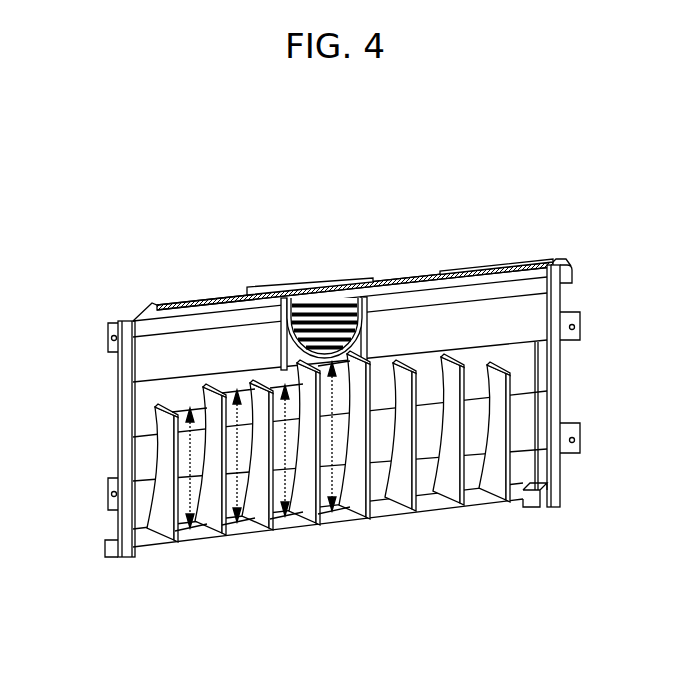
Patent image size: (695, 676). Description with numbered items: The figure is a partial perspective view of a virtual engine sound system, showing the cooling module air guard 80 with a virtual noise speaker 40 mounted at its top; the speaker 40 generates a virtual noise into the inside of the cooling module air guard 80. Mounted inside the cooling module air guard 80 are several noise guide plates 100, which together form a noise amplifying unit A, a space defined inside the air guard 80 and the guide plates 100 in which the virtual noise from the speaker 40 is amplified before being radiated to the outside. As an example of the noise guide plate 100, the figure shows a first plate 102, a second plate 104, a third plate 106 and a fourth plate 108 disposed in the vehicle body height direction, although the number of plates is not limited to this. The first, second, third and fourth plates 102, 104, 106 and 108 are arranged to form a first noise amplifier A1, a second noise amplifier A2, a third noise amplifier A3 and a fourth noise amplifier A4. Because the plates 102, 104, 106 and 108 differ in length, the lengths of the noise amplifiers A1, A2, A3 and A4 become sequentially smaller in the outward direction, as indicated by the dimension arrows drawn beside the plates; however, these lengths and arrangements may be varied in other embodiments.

The noise guide plate 100 is at (358, 540).
The first plate 102 is at (330, 529).
The second plate 104 is at (254, 528).
The third plate 106 is at (208, 532).
The fourth plate 108 is at (165, 535).
The virtual noise speaker 40 is at (307, 287).
The cooling module air guard 80 is at (490, 270).
The noise amplifying unit A is at (52, 437).
The first noise amplifier A1 is at (205, 468).
The second noise amplifier A2 is at (322, 484).
The third noise amplifier A3 is at (278, 459).
The fourth noise amplifier A4 is at (230, 449).